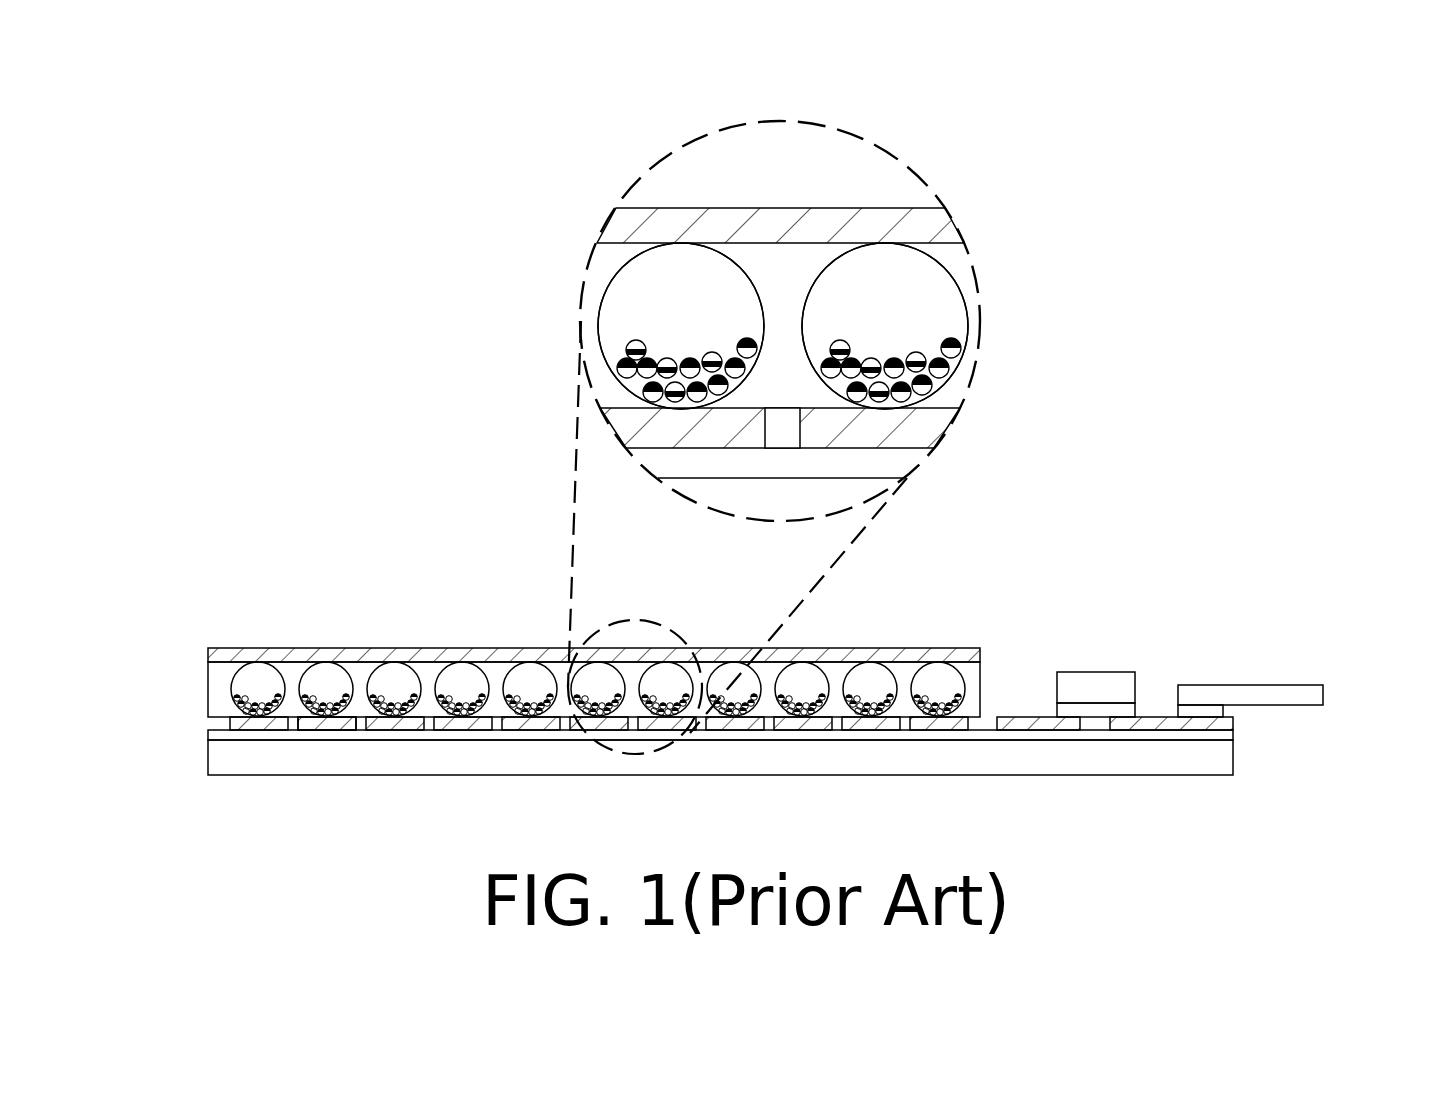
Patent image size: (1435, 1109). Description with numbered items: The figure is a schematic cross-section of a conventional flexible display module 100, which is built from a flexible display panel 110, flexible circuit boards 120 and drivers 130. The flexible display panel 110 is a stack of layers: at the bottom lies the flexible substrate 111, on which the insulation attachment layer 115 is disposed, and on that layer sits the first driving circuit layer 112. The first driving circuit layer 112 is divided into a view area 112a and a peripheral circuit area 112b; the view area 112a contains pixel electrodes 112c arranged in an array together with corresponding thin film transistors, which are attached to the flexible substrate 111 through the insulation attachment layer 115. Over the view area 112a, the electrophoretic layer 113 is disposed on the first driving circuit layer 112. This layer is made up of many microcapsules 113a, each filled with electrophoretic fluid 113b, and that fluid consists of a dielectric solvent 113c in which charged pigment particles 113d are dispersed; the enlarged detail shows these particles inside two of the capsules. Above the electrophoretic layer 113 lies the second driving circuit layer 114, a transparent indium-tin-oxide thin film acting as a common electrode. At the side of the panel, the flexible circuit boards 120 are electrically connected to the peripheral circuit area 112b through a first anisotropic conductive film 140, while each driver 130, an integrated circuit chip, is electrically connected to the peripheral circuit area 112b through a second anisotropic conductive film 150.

The flexible display module 100 is at (737, 487).
The flexible display panel 110 is at (646, 471).
The flexible substrate 111 is at (681, 770).
The first driving circuit layer 112 is at (681, 665).
The view area 112a is at (900, 710).
The peripheral circuit area 112b is at (1033, 696).
The pixel electrode 112c is at (325, 727).
The electrophoretic layer 113 is at (602, 437).
The microcapsule 113a is at (442, 673).
The electrophoretic fluid 113b is at (601, 479).
The dielectric solvent 113c is at (605, 302).
The charged pigment particle 113d is at (628, 348).
The second driving circuit layer 114 is at (204, 657).
The insulation attachment layer 115 is at (210, 733).
The flexible circuit board 120 is at (1265, 697).
The driver 130 is at (1108, 677).
The first anisotropic conductive film 140 is at (1200, 712).
The second anisotropic conductive film 150 is at (1097, 712).